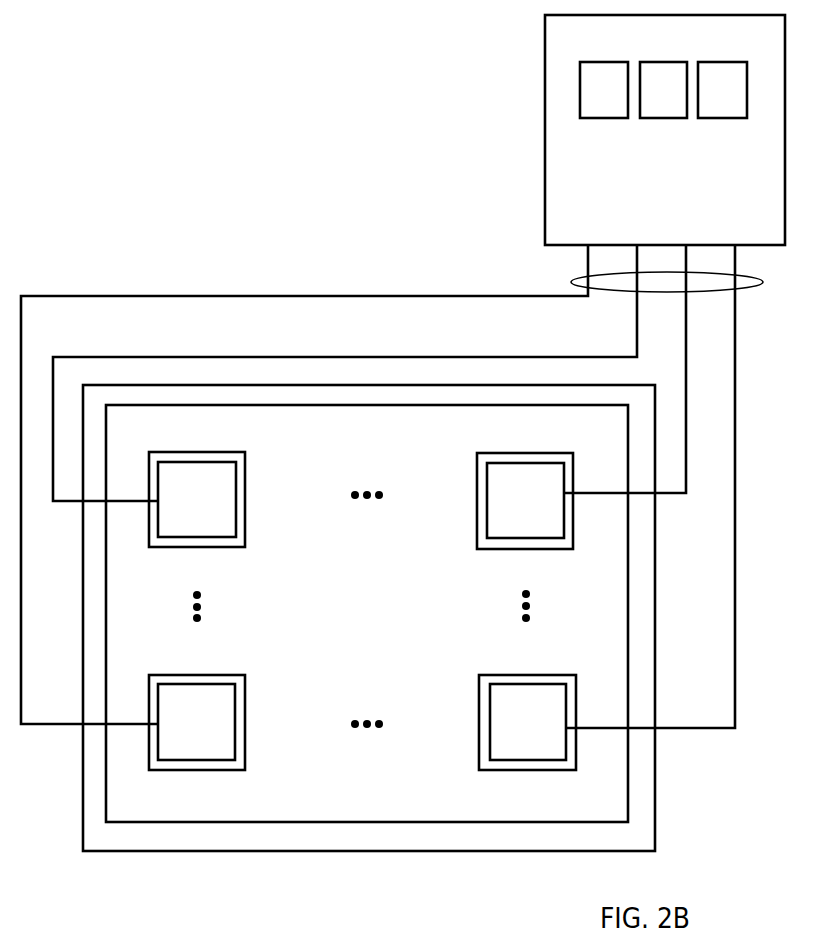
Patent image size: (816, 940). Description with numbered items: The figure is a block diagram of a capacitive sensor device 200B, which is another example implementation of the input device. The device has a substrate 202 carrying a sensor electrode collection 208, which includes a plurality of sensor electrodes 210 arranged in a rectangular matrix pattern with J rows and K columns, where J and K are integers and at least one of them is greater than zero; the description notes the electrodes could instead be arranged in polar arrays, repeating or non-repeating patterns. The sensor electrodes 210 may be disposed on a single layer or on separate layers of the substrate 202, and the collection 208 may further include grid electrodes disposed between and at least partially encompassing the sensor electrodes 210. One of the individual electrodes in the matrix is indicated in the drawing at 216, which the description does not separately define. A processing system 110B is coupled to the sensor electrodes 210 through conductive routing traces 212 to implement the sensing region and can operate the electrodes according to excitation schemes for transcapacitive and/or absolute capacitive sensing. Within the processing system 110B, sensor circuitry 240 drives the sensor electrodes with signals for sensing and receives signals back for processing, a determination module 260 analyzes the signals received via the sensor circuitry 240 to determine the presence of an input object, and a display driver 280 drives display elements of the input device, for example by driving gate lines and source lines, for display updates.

The capacitive sensor device 200B is at (291, 194).
The processing system 110B is at (685, 217).
The sensor circuitry 240 is at (620, 100).
The determination module 260 is at (678, 100).
The display driver 280 is at (737, 100).
The conductive routing traces 212 is at (763, 284).
The substrate 202 is at (122, 851).
The sensor electrode collection 208 is at (170, 822).
The sensor electrodes 210 is at (223, 511).
The sensor electrode 216 is at (246, 703).